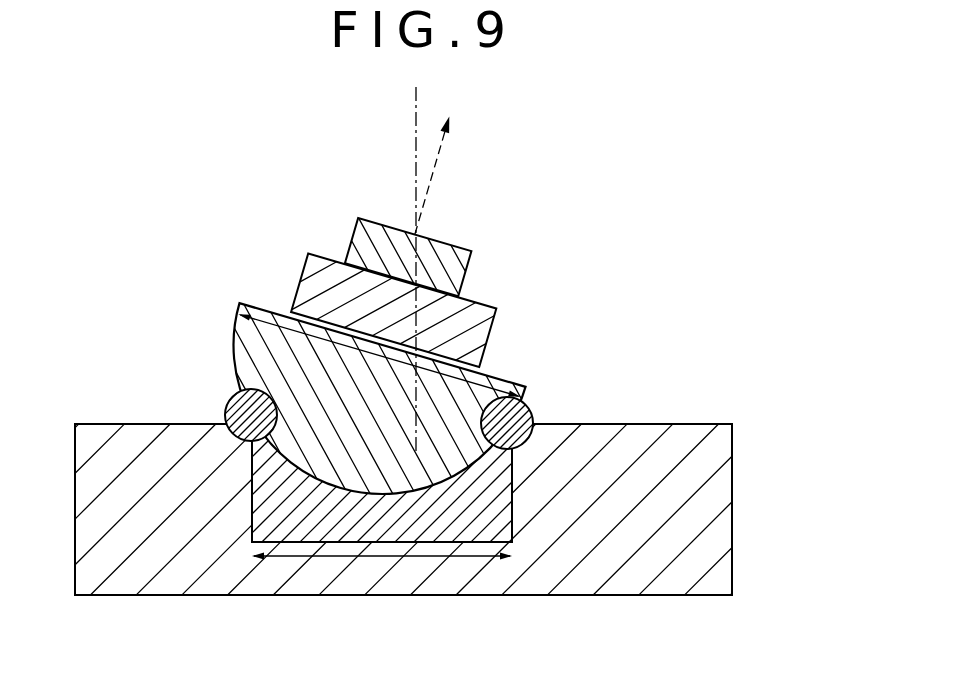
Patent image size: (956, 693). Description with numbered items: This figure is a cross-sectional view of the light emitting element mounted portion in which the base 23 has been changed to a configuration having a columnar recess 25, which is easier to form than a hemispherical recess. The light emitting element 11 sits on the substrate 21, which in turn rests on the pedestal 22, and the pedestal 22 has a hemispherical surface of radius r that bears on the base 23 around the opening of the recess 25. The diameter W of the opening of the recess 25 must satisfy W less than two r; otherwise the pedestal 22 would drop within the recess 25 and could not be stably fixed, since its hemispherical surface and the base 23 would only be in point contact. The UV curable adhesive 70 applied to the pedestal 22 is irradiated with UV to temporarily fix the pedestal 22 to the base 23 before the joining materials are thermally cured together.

The light emitting element 11 is at (457, 273).
The substrate 21 is at (481, 333).
The pedestal 22 is at (250, 348).
The base 23 is at (717, 500).
The columnar recess 25 is at (500, 513).
The UV curable adhesive 70 is at (238, 407).